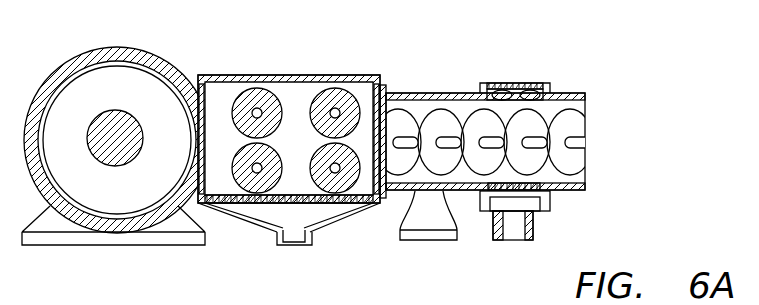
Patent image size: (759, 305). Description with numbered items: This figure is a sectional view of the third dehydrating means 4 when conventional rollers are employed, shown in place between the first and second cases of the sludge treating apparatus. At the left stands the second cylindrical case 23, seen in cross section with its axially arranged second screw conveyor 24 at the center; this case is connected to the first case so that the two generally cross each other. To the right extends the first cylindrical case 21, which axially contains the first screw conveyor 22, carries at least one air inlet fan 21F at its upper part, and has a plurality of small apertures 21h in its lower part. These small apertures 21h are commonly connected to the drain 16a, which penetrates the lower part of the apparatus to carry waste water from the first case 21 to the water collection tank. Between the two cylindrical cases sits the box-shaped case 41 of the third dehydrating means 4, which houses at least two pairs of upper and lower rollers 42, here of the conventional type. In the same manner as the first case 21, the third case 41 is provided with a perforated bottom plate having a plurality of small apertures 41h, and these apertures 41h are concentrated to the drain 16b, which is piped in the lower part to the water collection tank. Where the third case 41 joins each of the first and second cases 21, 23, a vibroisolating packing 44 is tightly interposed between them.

The third dehydrating means 4 is at (281, 145).
The drain 16a is at (512, 228).
The drain 16b is at (292, 238).
The first cylindrical case 21 is at (562, 191).
The air inlet fan 21F is at (524, 88).
The small apertures 21h is at (490, 186).
The first screw conveyor 22 is at (437, 118).
The second cylindrical case 23 is at (73, 58).
The second screw conveyor 24 is at (115, 167).
The box-shaped case 41 is at (246, 75).
The small apertures 41h is at (250, 205).
The upper and lower rollers 42 is at (318, 100).
The vibroisolating packing 44 is at (198, 105).